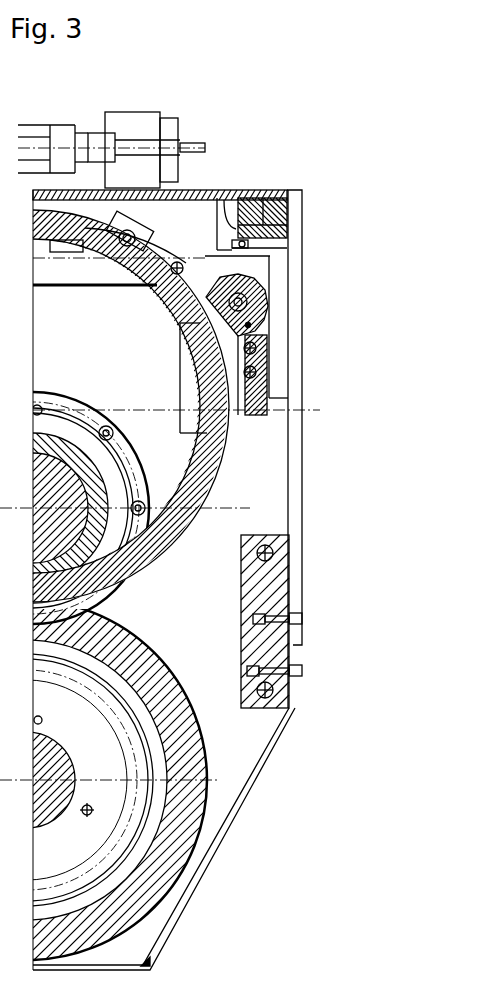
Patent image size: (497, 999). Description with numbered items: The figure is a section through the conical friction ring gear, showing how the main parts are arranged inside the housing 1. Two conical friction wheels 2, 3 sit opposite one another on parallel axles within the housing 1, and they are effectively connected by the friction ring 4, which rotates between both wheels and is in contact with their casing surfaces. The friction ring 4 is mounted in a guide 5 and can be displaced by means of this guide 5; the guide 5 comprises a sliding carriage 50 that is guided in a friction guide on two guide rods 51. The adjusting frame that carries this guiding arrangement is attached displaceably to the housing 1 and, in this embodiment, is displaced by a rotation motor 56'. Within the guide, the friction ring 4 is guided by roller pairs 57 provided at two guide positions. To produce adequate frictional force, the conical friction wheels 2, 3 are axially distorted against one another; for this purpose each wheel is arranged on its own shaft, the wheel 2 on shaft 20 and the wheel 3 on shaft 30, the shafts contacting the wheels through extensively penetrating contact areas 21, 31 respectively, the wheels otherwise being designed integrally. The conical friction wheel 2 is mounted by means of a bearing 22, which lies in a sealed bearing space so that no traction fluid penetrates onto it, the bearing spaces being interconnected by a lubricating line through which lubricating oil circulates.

The housing 1 is at (258, 196).
The conical friction wheel 2 is at (100, 502).
The conical friction wheel 3 is at (183, 825).
The friction ring 4 is at (198, 493).
The guide 5 is at (190, 230).
The shaft 20 is at (62, 520).
The contact area 21 is at (118, 476).
The bearing 22 is at (90, 415).
The shaft 30 is at (50, 767).
The contact area 31 is at (80, 827).
The sliding carriage 50 is at (160, 246).
The guide rod 51 is at (272, 298).
The rotation motor 56' is at (111, 114).
The roller pair 57 is at (218, 398).